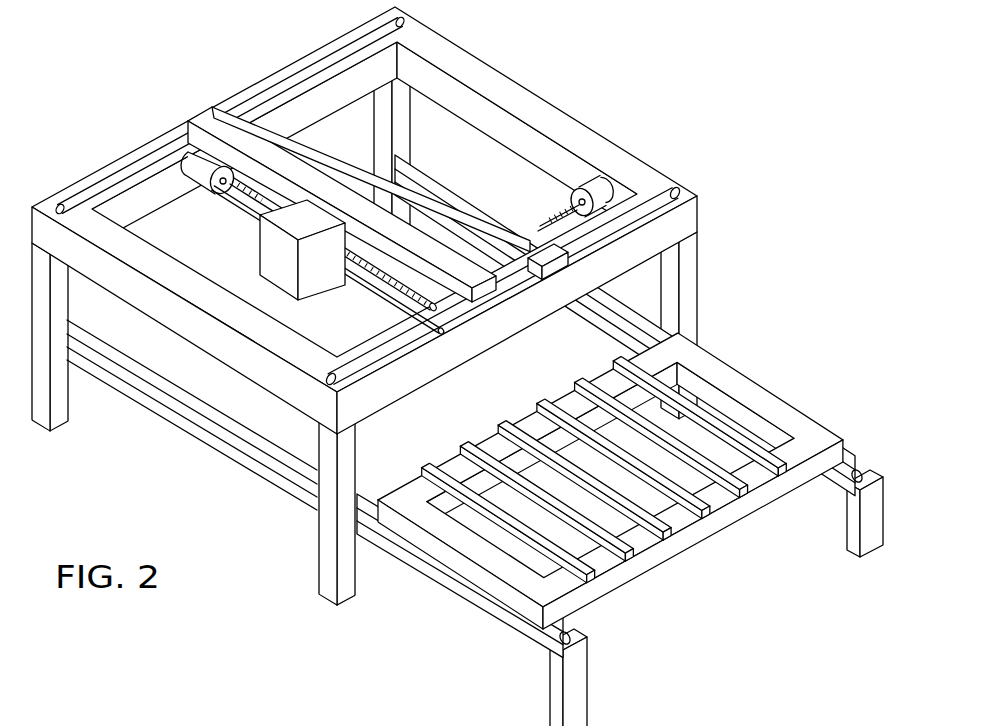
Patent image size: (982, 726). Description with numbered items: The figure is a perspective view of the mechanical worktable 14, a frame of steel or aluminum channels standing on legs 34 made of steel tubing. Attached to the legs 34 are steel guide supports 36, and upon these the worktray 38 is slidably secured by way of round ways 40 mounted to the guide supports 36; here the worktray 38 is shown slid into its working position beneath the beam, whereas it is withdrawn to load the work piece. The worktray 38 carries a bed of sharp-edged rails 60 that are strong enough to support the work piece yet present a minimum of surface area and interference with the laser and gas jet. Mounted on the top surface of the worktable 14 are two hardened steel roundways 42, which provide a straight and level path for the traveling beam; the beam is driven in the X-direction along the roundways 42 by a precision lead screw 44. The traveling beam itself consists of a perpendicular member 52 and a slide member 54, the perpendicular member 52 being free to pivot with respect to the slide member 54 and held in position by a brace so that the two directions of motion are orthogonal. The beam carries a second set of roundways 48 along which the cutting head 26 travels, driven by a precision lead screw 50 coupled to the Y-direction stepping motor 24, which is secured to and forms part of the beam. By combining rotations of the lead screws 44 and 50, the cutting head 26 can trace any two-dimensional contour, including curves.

The mechanical worktable 14 is at (640, 118).
The Y-direction stepping motor 24 is at (196, 160).
The cutting head 26 is at (287, 277).
The legs 34 is at (692, 280).
The guide supports 36 is at (472, 217).
The worktray 38 is at (712, 527).
The round ways 40 is at (548, 634).
The roundways 42 is at (333, 50).
The precision lead screw 44 is at (543, 226).
The roundways 48 is at (250, 183).
The precision lead screw 50 is at (252, 217).
The perpendicular member 52 is at (200, 112).
The slide member 54 is at (556, 272).
The sharp-edged rails 60 is at (507, 392).